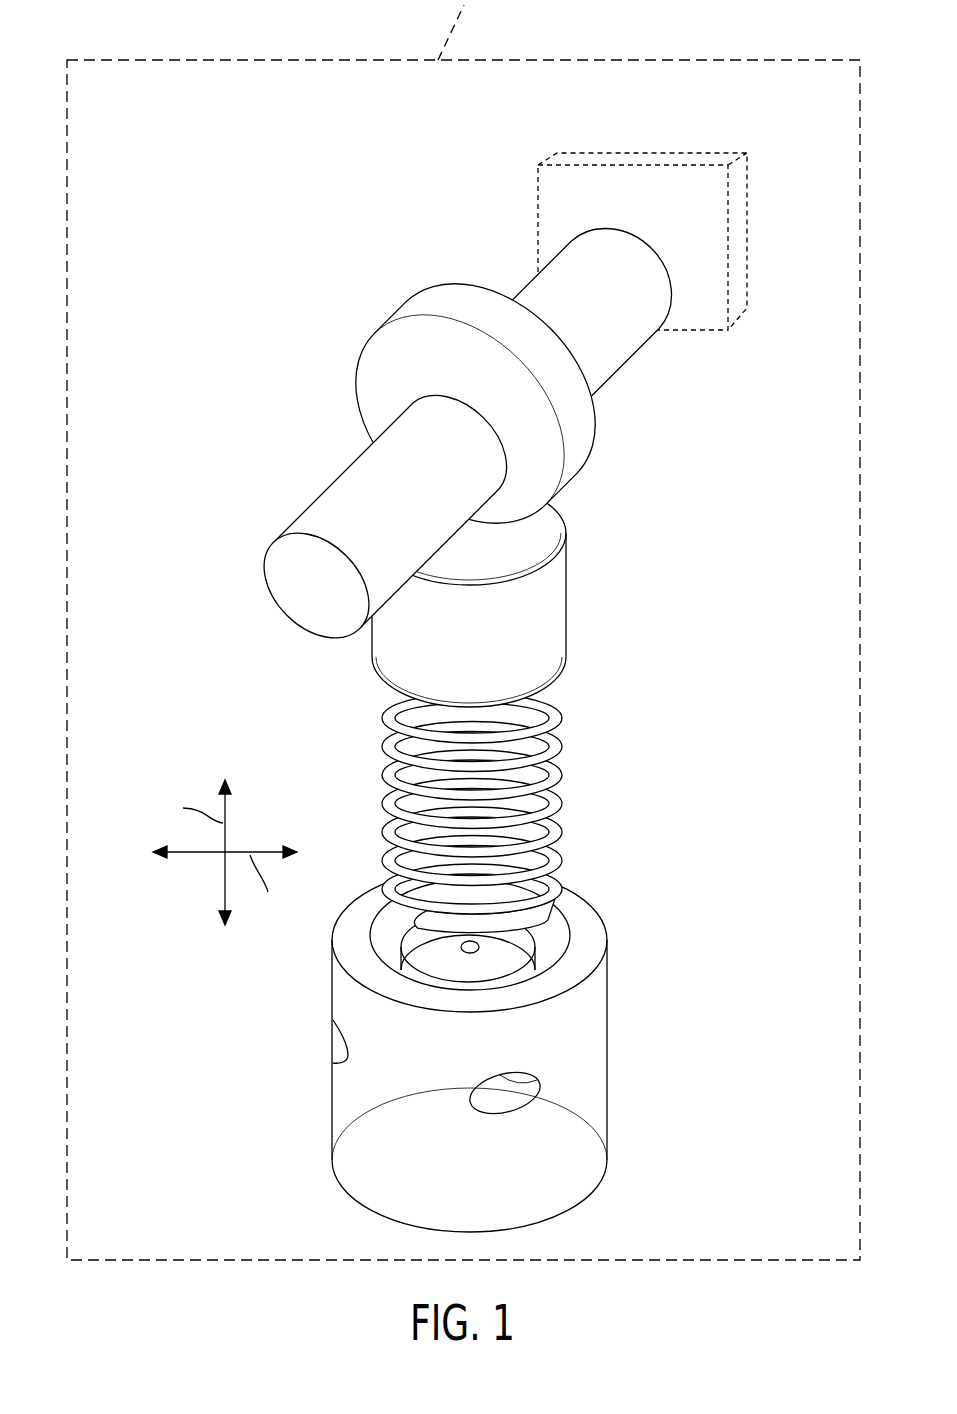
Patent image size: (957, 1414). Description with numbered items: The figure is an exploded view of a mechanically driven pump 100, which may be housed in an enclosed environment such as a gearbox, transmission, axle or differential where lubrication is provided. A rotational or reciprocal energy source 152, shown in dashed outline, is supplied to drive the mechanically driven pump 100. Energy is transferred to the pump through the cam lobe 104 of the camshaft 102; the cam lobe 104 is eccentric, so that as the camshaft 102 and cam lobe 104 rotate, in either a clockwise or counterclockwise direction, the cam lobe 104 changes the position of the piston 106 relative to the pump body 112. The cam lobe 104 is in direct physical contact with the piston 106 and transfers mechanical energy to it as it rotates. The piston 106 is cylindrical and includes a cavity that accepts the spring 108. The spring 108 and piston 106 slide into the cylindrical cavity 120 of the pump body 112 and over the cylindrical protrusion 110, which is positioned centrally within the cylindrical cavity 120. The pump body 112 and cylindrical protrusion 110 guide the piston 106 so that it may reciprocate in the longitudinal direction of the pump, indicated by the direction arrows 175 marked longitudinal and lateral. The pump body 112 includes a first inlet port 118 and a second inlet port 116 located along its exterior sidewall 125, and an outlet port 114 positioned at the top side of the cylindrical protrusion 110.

The mechanically driven pump 100 is at (436, 668).
The camshaft 102 is at (615, 318).
The cam lobe 104 is at (560, 400).
The piston 106 is at (483, 650).
The spring 108 is at (566, 707).
The cylindrical protrusion 110 is at (535, 940).
The pump body 112 is at (570, 990).
The outlet port 114 is at (468, 957).
The second inlet port 116 is at (541, 1085).
The first inlet port 118 is at (335, 1062).
The cylindrical cavity 120 is at (550, 921).
The exterior sidewall 125 is at (357, 1140).
The rotational or reciprocal energy source 152 is at (697, 150).
The coordinate system 175 is at (252, 803).